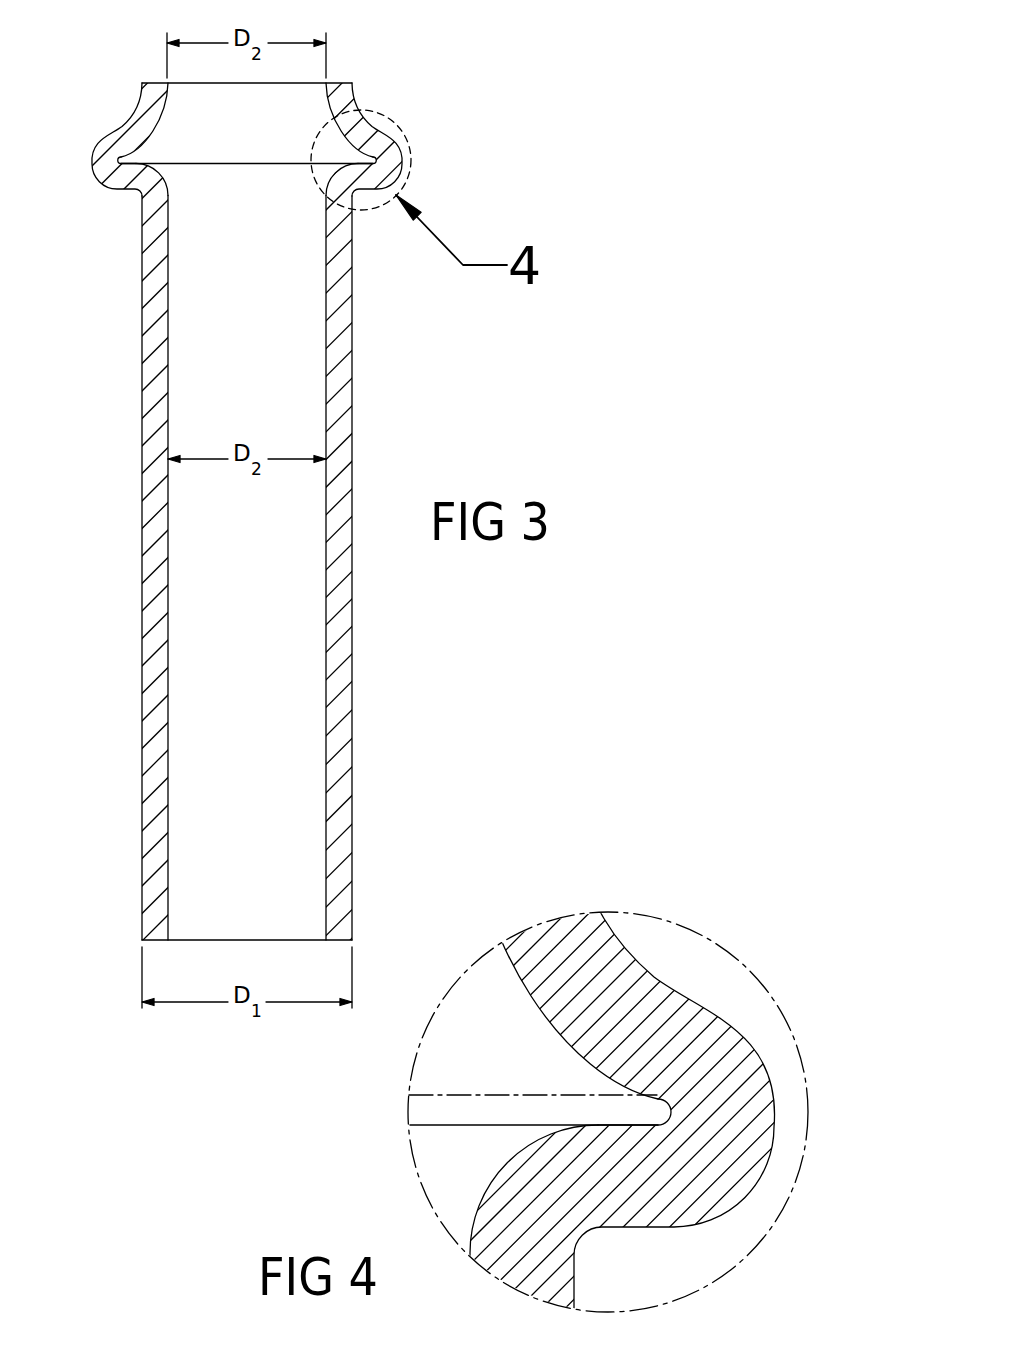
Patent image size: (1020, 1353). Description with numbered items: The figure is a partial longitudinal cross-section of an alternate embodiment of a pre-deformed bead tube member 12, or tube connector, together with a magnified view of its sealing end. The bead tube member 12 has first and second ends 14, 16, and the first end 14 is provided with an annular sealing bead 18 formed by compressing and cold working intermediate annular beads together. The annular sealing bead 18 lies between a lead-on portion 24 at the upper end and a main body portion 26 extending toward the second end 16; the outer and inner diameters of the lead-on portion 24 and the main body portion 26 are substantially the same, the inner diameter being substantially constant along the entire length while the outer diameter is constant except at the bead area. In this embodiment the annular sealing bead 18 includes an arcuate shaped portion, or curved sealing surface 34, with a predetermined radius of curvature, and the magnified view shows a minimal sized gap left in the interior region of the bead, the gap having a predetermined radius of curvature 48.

In FIG. 3, the bead tube member 12 is at (510, 479).
In FIG. 3, the first end 14 is at (263, 112).
In FIG. 3, the second end 16 is at (110, 862).
In FIG. 3, the annular sealing bead 18 is at (402, 158).
In FIG. 4, the annular sealing bead 18 is at (674, 1078).
In FIG. 3, the lead-on portion 24 is at (338, 92).
In FIG. 3, the main body portion 26 is at (155, 557).
In FIG. 3, the curved sealing surface 34 is at (383, 123).
In FIG. 4, the curved sealing surface 34 is at (688, 948).
In FIG. 3, the radius of curvature 48 is at (378, 166).
In FIG. 4, the radius of curvature 48 is at (634, 1112).